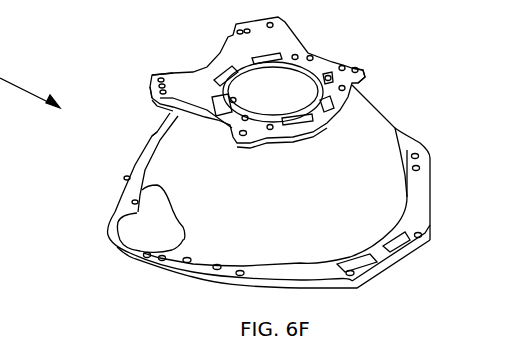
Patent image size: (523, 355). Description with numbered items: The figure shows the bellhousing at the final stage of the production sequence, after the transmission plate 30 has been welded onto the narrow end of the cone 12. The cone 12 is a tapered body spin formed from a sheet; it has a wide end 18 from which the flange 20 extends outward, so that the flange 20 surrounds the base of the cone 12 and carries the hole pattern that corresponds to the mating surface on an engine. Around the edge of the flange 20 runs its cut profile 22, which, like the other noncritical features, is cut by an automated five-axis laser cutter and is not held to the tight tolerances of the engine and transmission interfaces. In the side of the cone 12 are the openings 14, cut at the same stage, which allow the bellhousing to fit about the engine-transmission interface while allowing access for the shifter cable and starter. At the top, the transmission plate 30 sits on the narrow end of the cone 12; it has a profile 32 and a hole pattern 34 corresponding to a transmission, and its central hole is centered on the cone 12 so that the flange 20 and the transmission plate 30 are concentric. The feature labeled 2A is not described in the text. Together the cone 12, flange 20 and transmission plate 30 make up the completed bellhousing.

The cone 12 is at (181, 123).
The openings 14 is at (132, 228).
The rib 2A is at (125, 177).
The wide end 18 is at (415, 215).
The flange 20 is at (408, 145).
The profile 22 is at (417, 177).
The transmission plate 30 is at (272, 40).
The profile 32 is at (190, 77).
The hole pattern 34 is at (360, 72).